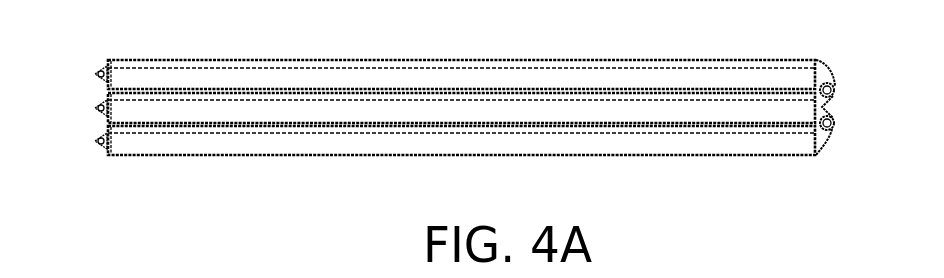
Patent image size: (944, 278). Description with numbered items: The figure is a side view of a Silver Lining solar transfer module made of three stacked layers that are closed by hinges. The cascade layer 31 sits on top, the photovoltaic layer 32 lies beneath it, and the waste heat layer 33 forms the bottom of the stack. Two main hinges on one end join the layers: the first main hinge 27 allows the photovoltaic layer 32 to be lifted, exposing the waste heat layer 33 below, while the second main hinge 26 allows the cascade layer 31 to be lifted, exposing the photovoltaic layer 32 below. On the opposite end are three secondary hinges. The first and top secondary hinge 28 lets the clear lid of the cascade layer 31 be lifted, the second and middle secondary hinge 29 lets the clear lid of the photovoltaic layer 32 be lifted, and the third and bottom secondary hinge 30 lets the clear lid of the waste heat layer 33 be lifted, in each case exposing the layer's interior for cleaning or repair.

The second main hinge 26 is at (835, 88).
The first main hinge 27 is at (833, 128).
The first secondary hinge 28 is at (100, 73).
The second secondary hinge 29 is at (95, 106).
The third secondary hinge 30 is at (98, 138).
The cascade layer 31 is at (738, 73).
The photovoltaic layer 32 is at (620, 103).
The waste heat layer 33 is at (265, 132).